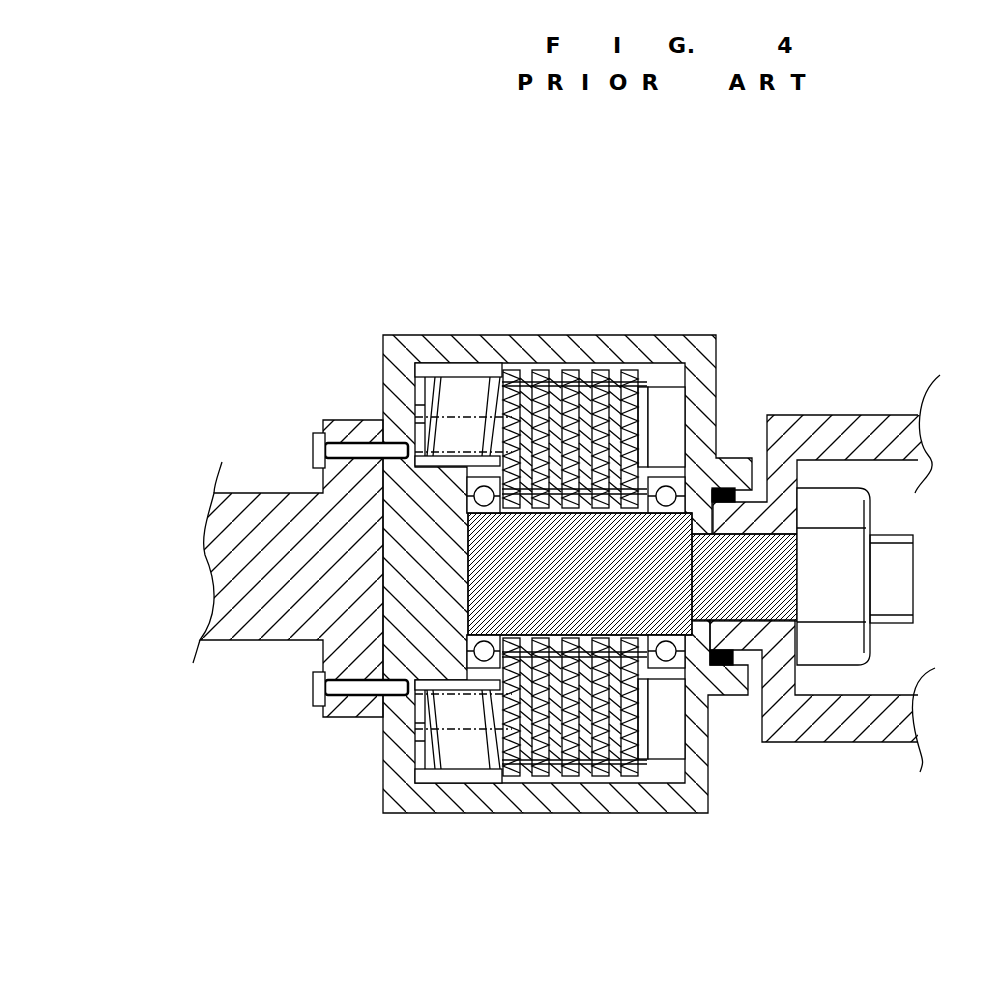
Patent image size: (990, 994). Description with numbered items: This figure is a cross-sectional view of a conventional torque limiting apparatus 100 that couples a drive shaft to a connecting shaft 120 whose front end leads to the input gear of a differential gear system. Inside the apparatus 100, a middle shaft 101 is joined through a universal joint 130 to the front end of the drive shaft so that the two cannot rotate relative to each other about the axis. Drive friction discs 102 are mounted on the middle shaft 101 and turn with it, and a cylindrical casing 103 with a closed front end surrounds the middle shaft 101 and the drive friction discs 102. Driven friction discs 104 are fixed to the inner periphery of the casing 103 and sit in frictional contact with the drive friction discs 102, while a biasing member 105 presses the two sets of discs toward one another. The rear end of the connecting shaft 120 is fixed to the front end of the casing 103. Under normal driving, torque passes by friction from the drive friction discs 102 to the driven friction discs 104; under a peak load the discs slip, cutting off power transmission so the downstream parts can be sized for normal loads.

The torque limiting apparatus 100 is at (724, 298).
The middle shaft 101 is at (740, 590).
The drive friction discs 102 is at (690, 742).
The cylindrical casing 103 is at (592, 345).
The driven friction discs 104 is at (503, 781).
The biasing member 105 is at (436, 760).
The connecting shaft 120 is at (262, 515).
The universal joint 130 is at (842, 428).